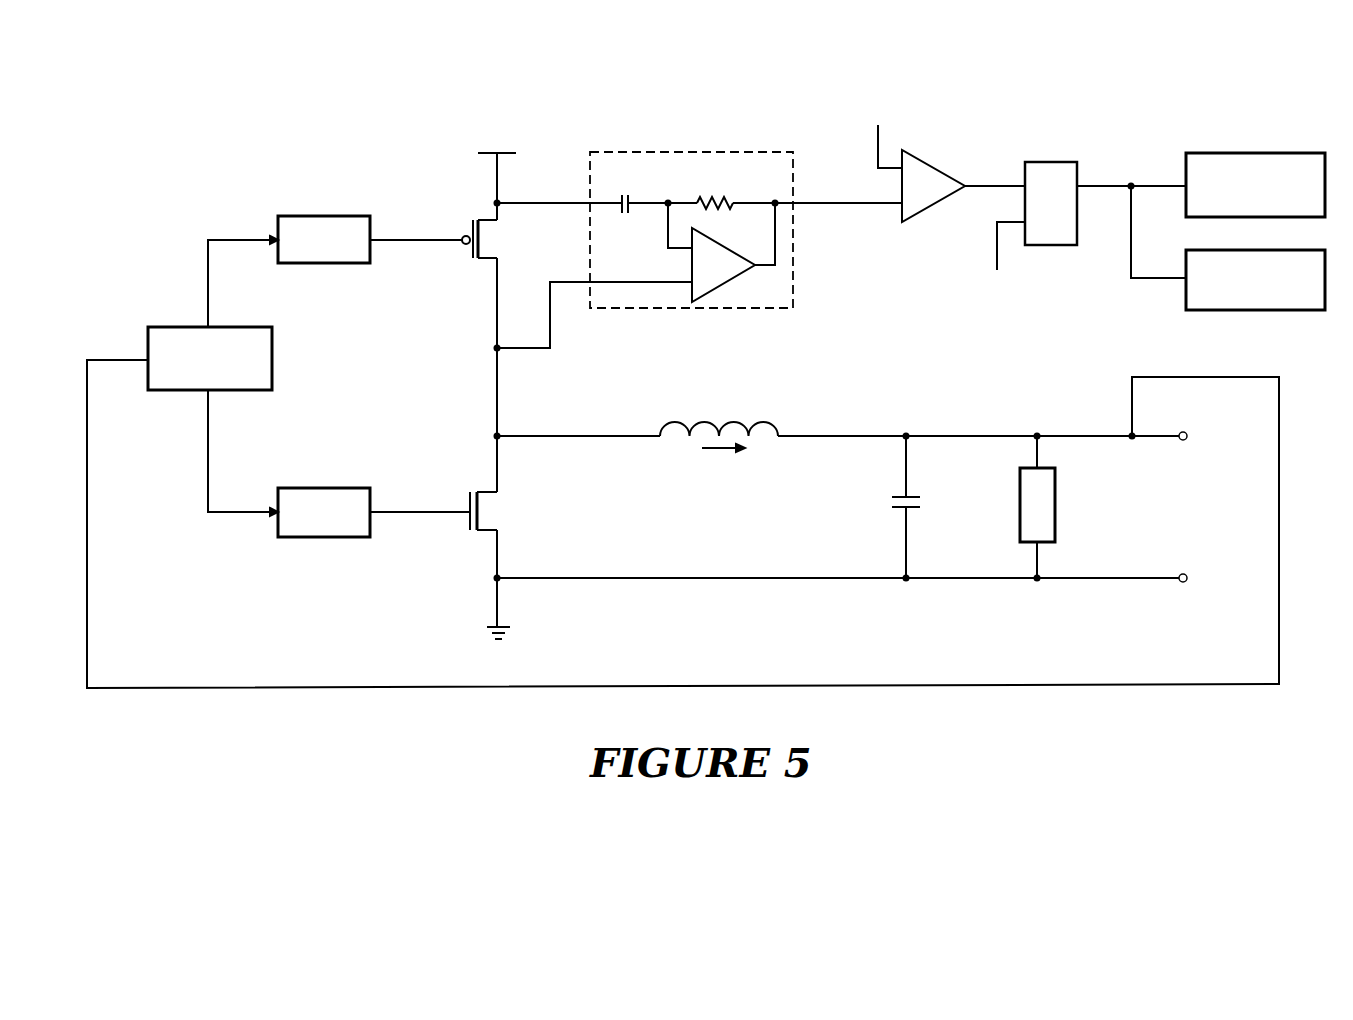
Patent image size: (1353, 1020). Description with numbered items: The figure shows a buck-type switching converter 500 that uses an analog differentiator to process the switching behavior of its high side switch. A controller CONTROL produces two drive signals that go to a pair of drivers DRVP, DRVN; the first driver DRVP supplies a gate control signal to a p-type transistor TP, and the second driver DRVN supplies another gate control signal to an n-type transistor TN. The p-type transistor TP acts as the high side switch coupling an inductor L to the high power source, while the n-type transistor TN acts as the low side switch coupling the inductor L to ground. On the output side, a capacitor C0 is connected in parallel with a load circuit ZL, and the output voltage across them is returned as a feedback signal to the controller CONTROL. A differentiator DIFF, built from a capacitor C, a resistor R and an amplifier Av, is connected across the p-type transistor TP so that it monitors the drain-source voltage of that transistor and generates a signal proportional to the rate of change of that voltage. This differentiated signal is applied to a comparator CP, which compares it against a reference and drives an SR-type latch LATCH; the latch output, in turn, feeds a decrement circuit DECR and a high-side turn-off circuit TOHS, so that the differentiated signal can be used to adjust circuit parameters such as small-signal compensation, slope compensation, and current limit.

The switching converter 500 is at (162, 150).
The controller CONTROL is at (210, 358).
The driver DRVP is at (324, 239).
The driver DRVN is at (324, 512).
The p-type transistor TP is at (494, 239).
The n-type transistor TN is at (499, 511).
The differentiator DIFF is at (691, 218).
The capacitor C is at (627, 191).
The resistor R is at (715, 190).
The amplifier Av is at (723, 265).
The comparator CP is at (933, 186).
The SR-type latch LATCH is at (1045, 190).
The decrement circuit DECR is at (1255, 174).
The high-side turn-off circuit TOHS is at (1255, 295).
The inductor L is at (719, 418).
The capacitor C0 is at (926, 510).
The load circuit ZL is at (1059, 505).